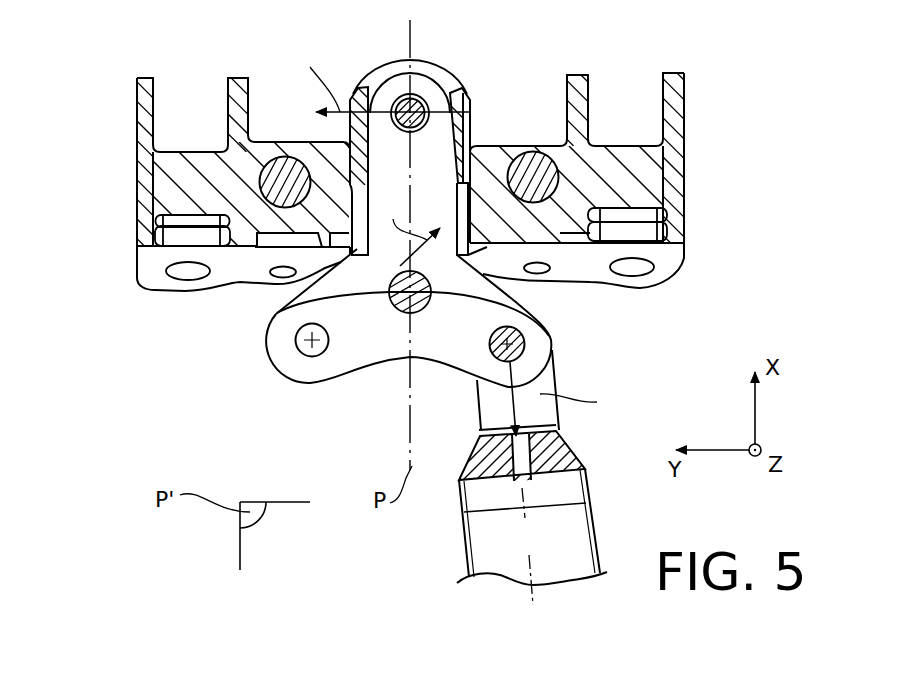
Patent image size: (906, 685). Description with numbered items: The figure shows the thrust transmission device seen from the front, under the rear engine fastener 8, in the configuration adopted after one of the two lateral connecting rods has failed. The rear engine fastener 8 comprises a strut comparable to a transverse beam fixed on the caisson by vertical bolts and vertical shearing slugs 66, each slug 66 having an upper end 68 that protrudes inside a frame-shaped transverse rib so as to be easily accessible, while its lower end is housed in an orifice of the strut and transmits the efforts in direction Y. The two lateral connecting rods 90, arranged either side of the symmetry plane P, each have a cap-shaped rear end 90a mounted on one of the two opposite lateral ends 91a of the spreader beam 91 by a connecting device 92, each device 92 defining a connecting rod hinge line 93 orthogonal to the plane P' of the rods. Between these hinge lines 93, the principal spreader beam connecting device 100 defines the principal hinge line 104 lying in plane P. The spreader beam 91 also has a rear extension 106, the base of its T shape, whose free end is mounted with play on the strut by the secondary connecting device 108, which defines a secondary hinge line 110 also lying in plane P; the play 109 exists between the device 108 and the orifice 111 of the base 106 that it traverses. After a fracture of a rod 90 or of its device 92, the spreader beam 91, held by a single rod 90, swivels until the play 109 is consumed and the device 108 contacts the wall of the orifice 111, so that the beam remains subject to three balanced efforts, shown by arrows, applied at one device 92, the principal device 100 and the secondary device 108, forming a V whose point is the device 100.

The rear engine fastener 8 is at (100, 96).
The vertical shearing slug 66 is at (286, 166).
The upper end of slug 68 is at (258, 172).
The lateral connecting rod for transmission of thrust efforts 90 is at (572, 535).
The rear end of connecting rod 90a is at (548, 450).
The spreader beam 91 is at (392, 352).
The lateral end of spreader beam 91a is at (287, 358).
The connecting device 92 is at (522, 331).
The connecting rod hinge line 93 is at (310, 353).
The principal spreader beam connecting device 100 is at (524, 306).
The principal spreader beam hinge line 104 is at (297, 318).
The rear extension (base of the T) 106 is at (443, 170).
The secondary connecting device of spreader beam 108 is at (397, 90).
The play 109 is at (433, 80).
The secondary spreader beam hinge line 110 is at (428, 107).
The orifice of base 111 is at (425, 121).